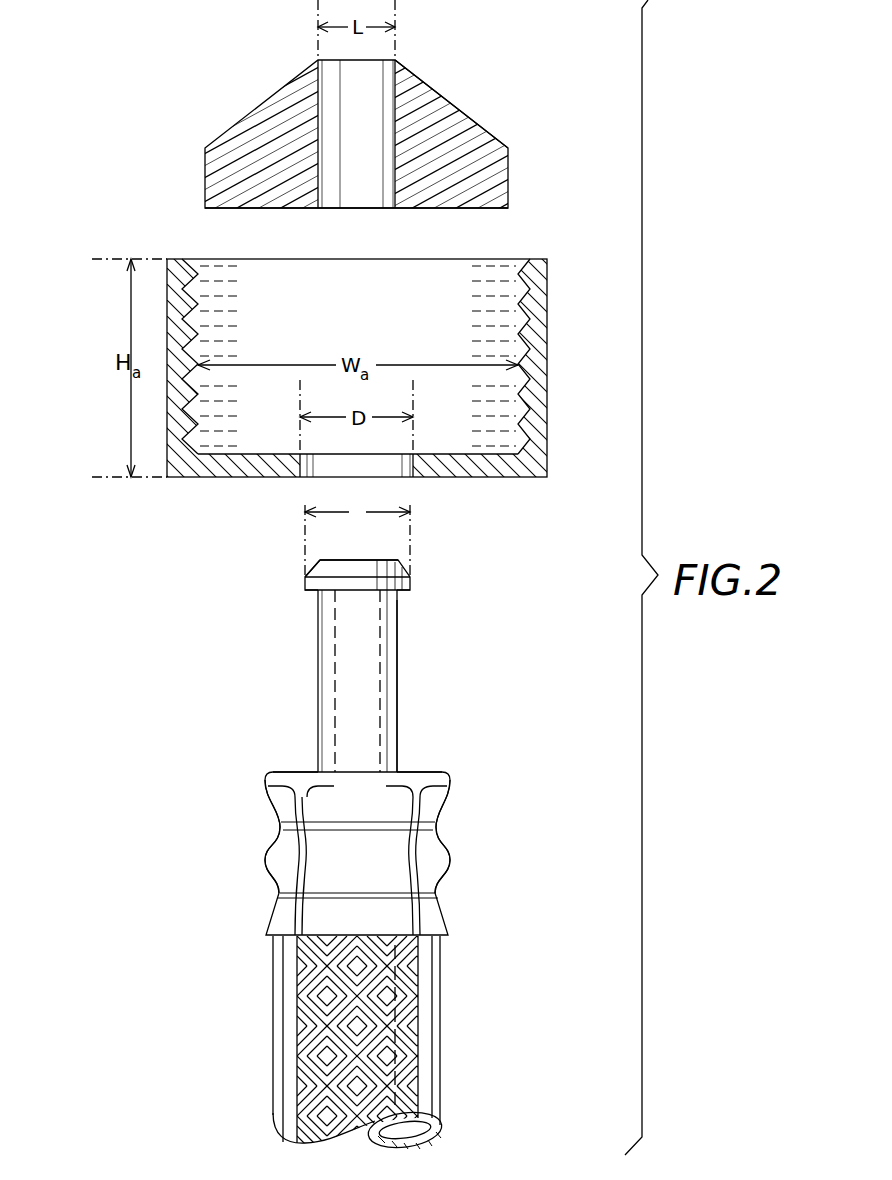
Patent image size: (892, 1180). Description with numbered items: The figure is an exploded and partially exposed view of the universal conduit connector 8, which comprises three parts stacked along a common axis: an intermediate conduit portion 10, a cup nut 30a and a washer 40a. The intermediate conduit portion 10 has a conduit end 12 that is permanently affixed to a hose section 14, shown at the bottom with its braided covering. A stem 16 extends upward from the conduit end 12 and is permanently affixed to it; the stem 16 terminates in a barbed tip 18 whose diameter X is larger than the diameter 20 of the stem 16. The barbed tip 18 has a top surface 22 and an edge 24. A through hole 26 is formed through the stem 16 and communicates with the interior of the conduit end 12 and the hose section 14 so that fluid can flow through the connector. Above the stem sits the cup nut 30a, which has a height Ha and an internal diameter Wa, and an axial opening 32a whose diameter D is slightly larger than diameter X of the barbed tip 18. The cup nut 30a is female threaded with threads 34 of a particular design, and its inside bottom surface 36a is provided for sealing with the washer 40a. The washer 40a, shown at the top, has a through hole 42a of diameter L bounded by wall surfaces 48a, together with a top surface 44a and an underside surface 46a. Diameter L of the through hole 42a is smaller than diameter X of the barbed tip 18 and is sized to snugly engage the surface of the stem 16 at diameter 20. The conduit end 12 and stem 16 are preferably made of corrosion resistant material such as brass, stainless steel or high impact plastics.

The universal conduit connector 8 is at (316, 822).
The intermediate conduit portion 10 is at (491, 785).
The conduit end 12 is at (265, 858).
The hose section 14 is at (273, 1017).
The stem 16 is at (290, 658).
The barbed tip 18 is at (446, 569).
The diameter of stem 20 is at (398, 677).
The top surface 22 is at (319, 560).
The edge 24 is at (310, 590).
The through hole 26 is at (340, 560).
The cup nut 30a is at (122, 229).
The axial opening 32a is at (385, 468).
The threads 34 is at (198, 305).
The inside bottom surface 36a is at (250, 453).
The washer 40a is at (242, 84).
The through hole 42a is at (363, 190).
The top surface 44a is at (458, 110).
The underside surface 46a is at (474, 208).
The wall surfaces 48a is at (323, 112).